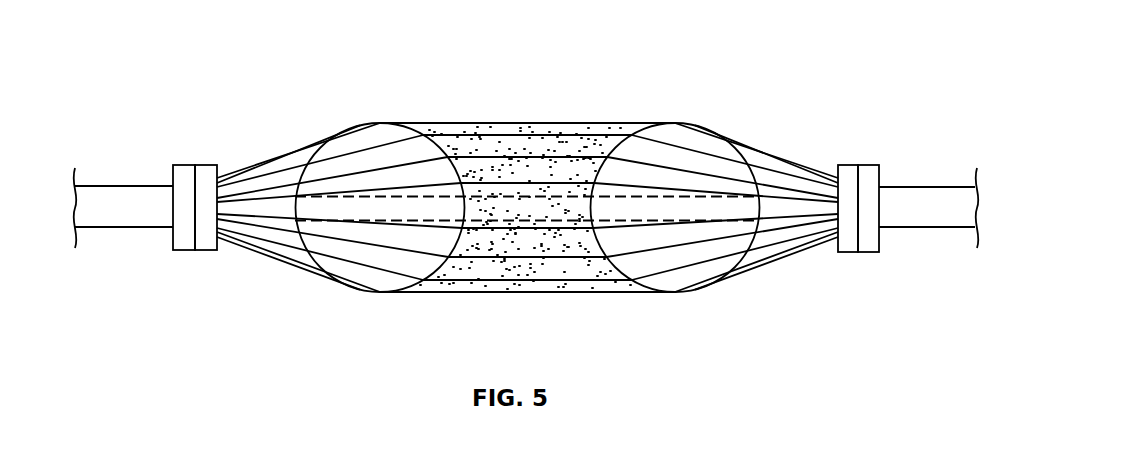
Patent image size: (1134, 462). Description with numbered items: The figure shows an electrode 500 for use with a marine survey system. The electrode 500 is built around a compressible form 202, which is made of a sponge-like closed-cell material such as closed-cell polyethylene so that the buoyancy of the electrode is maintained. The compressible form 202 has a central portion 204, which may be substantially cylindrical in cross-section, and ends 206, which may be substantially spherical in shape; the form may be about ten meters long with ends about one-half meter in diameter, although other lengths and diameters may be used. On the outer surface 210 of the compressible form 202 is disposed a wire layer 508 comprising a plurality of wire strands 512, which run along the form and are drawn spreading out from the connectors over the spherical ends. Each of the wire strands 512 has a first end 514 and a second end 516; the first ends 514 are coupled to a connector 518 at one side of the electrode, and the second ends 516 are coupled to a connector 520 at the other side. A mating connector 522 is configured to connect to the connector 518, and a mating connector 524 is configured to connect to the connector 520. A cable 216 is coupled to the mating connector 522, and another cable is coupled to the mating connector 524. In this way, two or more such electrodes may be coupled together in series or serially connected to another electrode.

The electrode 500 is at (526, 181).
The ends 206 is at (333, 131).
The outer surface 210 is at (516, 119).
The wire strands 512 is at (526, 204).
The second end 516 is at (826, 178).
The mating connector 524 is at (867, 164).
The cable 216 is at (135, 186).
The connector 518 is at (203, 164).
The first end 514 is at (226, 172).
The mating connector 522 is at (185, 251).
The wire layer 508 is at (478, 265).
The central portion 204 is at (516, 295).
The compressible form 202 is at (728, 275).
The connector 520 is at (858, 253).